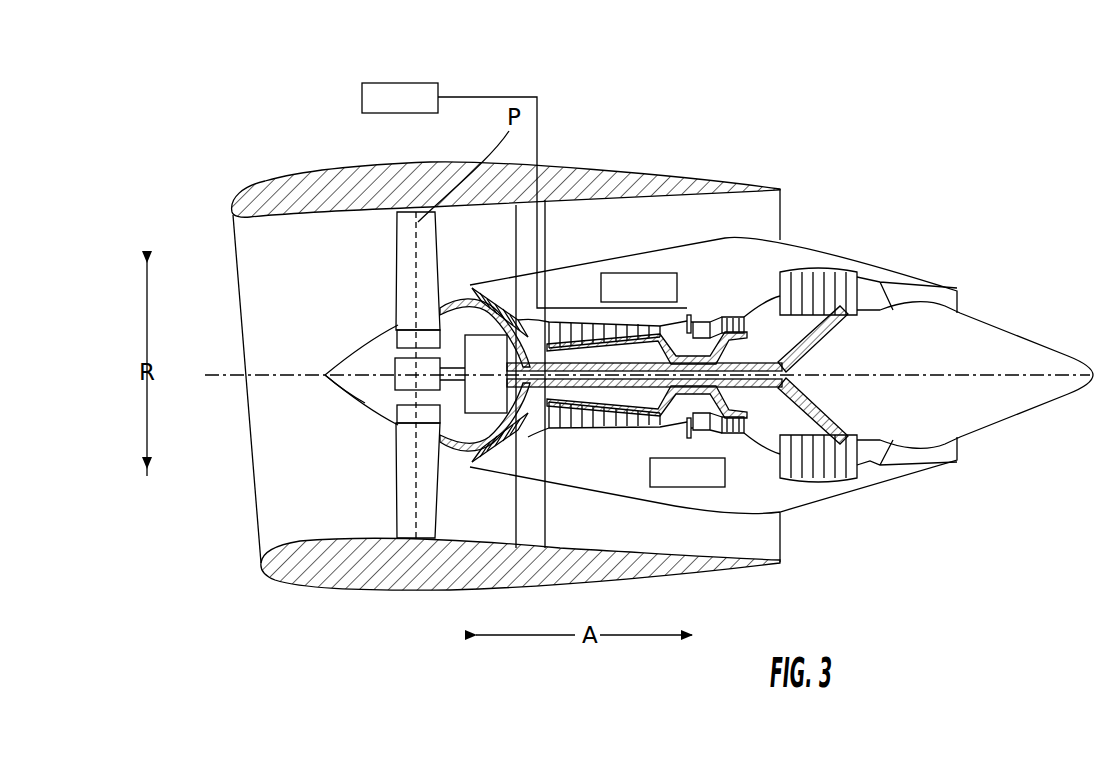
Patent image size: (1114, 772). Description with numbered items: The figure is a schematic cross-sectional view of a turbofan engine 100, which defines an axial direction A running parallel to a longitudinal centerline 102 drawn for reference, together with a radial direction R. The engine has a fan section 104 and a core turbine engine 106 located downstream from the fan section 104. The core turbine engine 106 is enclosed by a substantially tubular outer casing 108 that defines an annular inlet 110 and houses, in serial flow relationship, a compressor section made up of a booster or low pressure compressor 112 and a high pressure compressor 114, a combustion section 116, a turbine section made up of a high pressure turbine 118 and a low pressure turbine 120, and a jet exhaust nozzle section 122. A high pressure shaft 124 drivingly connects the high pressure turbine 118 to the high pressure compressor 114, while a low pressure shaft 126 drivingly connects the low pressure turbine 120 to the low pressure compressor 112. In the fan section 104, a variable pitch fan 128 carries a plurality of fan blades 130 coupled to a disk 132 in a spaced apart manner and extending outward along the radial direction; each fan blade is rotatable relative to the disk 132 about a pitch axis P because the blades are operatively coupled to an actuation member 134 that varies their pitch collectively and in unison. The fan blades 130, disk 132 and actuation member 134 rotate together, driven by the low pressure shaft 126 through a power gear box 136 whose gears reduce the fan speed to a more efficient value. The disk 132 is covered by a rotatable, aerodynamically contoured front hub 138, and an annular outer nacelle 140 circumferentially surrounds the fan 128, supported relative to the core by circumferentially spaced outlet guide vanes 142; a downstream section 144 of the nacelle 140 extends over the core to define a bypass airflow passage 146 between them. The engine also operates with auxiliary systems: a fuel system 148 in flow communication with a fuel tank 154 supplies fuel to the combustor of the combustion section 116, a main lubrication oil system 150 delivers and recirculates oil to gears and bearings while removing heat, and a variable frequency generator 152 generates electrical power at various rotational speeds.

The turbofan engine 100 is at (891, 171).
The longitudinal centerline 102 is at (912, 373).
The fan section 104 is at (364, 235).
The core turbine engine 106 is at (641, 247).
The outer casing 108 is at (670, 504).
The annular inlet 110 is at (467, 459).
The low pressure compressor 112 is at (518, 439).
The high pressure compressor 114 is at (568, 424).
The combustion section 116 is at (710, 441).
The high pressure turbine 118 is at (783, 428).
The low pressure turbine 120 is at (849, 480).
The jet exhaust nozzle section 122 is at (895, 464).
The high pressure shaft 124 is at (707, 320).
The low pressure shaft 126 is at (793, 348).
The variable pitch fan 128 is at (369, 416).
The fan blades 130 is at (393, 493).
The disk 132 is at (398, 338).
The actuation member 134 is at (395, 366).
The power gear box 136 is at (494, 345).
The front hub 138 is at (333, 387).
The outer nacelle 140 is at (432, 592).
The outlet guide vanes 142 is at (546, 228).
The downstream section 144 is at (693, 177).
The bypass airflow passage 146 is at (745, 228).
The fuel system 148 is at (543, 112).
The main lubrication oil system 150 is at (677, 292).
The variable frequency generator 152 is at (690, 487).
The fuel tank 154 is at (413, 109).